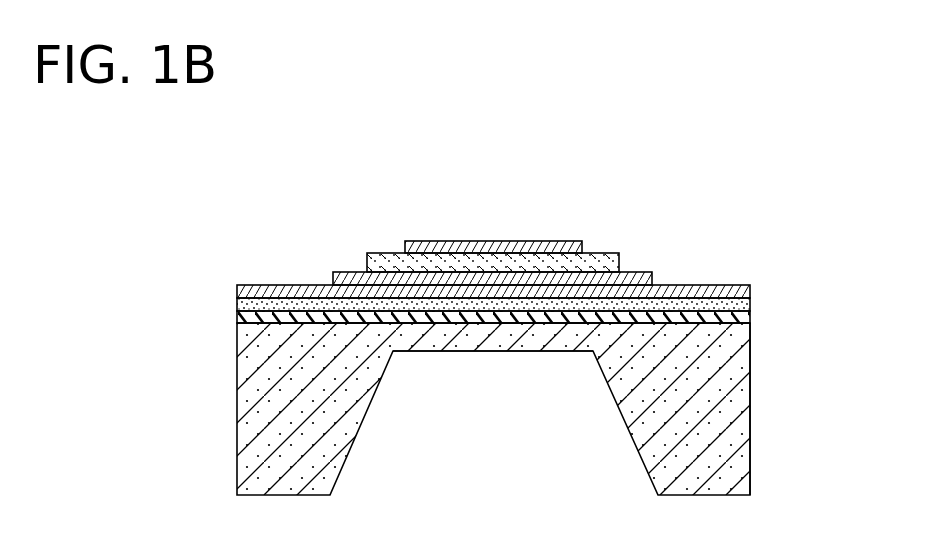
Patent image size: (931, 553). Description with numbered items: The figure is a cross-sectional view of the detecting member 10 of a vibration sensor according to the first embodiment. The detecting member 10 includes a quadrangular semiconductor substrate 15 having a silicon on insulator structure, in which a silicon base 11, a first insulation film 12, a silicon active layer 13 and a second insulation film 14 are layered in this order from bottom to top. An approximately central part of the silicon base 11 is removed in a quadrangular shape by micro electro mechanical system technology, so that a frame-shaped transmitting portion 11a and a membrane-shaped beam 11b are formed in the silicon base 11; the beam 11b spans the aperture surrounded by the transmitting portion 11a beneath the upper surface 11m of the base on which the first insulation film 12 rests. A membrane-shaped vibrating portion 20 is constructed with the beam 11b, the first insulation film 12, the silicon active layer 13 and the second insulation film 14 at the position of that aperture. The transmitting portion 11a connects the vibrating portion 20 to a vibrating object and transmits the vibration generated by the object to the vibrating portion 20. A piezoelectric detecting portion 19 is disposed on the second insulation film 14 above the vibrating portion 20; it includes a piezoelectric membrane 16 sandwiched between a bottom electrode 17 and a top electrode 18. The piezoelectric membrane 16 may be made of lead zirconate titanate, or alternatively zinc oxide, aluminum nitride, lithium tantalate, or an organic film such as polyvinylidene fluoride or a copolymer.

The detecting member 10 is at (664, 164).
The silicon base 11 is at (740, 387).
The transmitting portion 11a is at (740, 450).
The beam 11b is at (420, 353).
The main surface of substrate 11m is at (278, 322).
The first insulation film 12 is at (750, 320).
The silicon active layer 13 is at (750, 307).
The second insulation film 14 is at (750, 292).
The semiconductor substrate 15 is at (838, 243).
The piezoelectric membrane 16 is at (395, 263).
The bottom electrode 17 is at (346, 277).
The top electrode 18 is at (437, 248).
The piezoelectric detecting portion 19 is at (455, 168).
The vibrating portion 20 is at (496, 412).